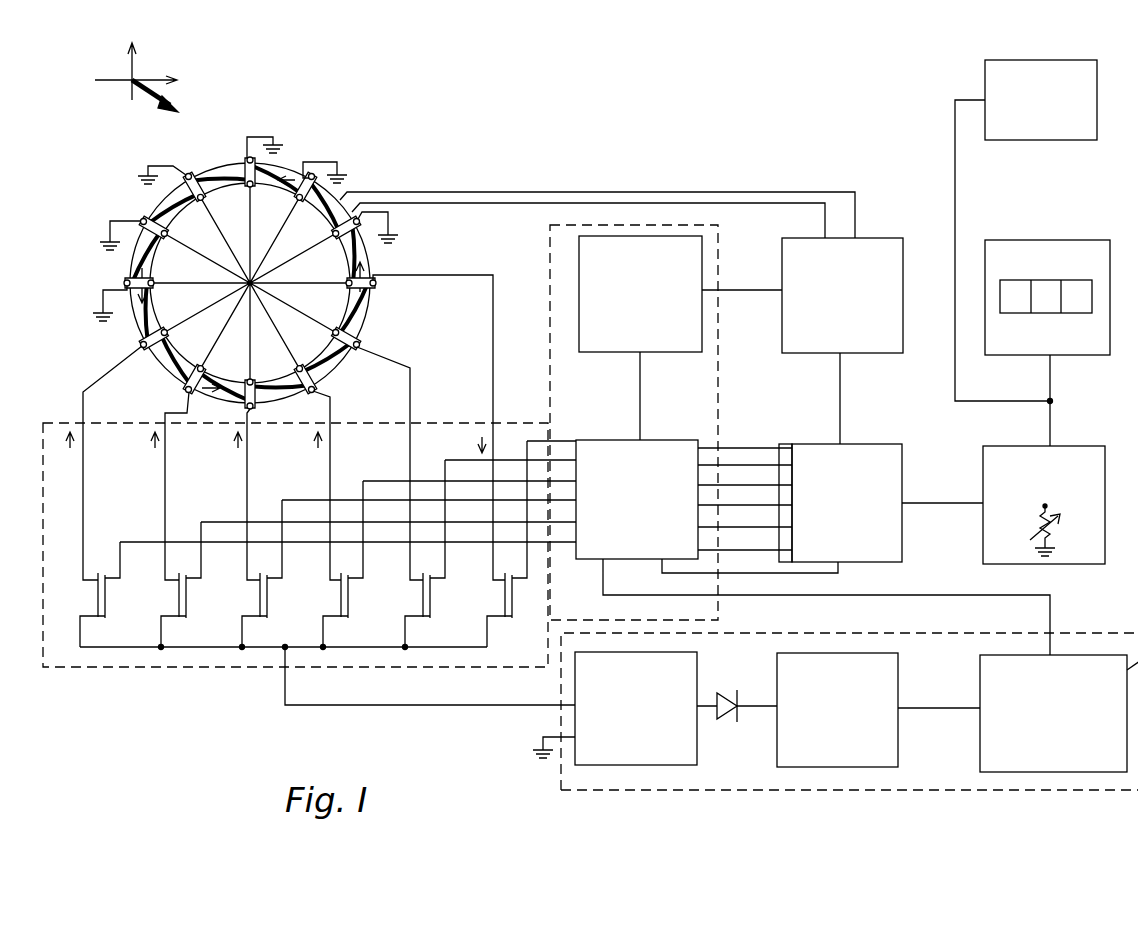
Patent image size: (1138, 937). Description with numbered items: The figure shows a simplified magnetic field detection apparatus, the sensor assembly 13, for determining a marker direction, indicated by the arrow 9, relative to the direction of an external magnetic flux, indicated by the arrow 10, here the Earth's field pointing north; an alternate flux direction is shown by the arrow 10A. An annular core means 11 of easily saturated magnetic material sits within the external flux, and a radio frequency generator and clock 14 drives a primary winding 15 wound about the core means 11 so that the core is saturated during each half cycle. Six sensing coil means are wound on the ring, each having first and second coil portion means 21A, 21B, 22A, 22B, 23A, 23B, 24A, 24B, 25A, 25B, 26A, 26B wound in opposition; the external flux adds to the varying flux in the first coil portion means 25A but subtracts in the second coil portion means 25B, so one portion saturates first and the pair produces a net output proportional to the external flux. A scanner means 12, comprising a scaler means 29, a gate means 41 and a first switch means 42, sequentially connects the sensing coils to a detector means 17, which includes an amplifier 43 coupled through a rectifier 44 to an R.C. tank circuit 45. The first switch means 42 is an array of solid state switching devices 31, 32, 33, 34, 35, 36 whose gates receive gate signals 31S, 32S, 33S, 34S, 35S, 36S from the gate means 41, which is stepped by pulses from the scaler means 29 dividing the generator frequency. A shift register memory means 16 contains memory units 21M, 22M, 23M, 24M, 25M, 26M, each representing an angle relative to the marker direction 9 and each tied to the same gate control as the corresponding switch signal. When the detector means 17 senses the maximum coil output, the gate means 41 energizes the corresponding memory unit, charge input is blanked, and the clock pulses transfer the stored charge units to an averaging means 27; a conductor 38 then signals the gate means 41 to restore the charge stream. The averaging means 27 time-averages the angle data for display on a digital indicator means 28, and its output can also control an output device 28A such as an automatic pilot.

The arrow (marker direction) 9 is at (138, 62).
The arrow (external magnetic flux) 10 is at (157, 106).
The arrow (alternate external flux direction) 10A is at (158, 78).
The core means 11 is at (368, 314).
The scanner means 12 is at (506, 425).
The magnetometer sensor assembly 13 is at (418, 166).
The radio frequency generator (and clock) 14 is at (888, 238).
The primary winding 15 is at (378, 252).
The shift register memory means 16 is at (878, 444).
The detector means 17 is at (1124, 620).
The first coil portion means 21A is at (376, 286).
The second coil portion means 21B is at (125, 282).
The first coil portion means 22A is at (353, 358).
The second coil portion means 22B is at (142, 218).
The first coil portion means 23A is at (314, 396).
The second coil portion means 23B is at (189, 173).
The first coil portion means 24A is at (248, 411).
The second coil portion means 24B is at (256, 158).
The first coil portion means 25A is at (186, 390).
The second coil portion means 25B is at (314, 174).
The first coil portion means 26A is at (141, 345).
The second coil portion means 26B is at (390, 216).
The averaging means 27 is at (1092, 446).
The indicator means 28 is at (1079, 240).
The output device 28A is at (1097, 122).
The scaler means 29 is at (664, 353).
The solid state switching device 31 is at (504, 598).
The solid state switching device 32 is at (422, 598).
The solid state switching device 33 is at (340, 598).
The solid state switching device 34 is at (259, 598).
The solid state switching device 35 is at (178, 598).
The solid state switching device 36 is at (97, 598).
The gate signal terminal 31S is at (552, 441).
The gate signal terminal 32S is at (510, 452).
The gate signal 33S is at (469, 473).
The gate signal 34S is at (429, 492).
The gate signal 35S is at (388, 514).
The gate signal 36S is at (348, 534).
The memory unit 21M is at (776, 447).
The memory unit 22M is at (776, 465).
The memory unit 23M is at (776, 485).
The memory unit 24M is at (776, 505).
The memory unit 25M is at (776, 527).
The memory unit 26M is at (776, 550).
The conductor 38 is at (838, 576).
The gate means 41 is at (652, 440).
The first switch means 42 is at (300, 487).
The amplifier 43 is at (697, 746).
The rectifier 44 is at (725, 691).
The R.C. tank circuit 45 is at (895, 767).